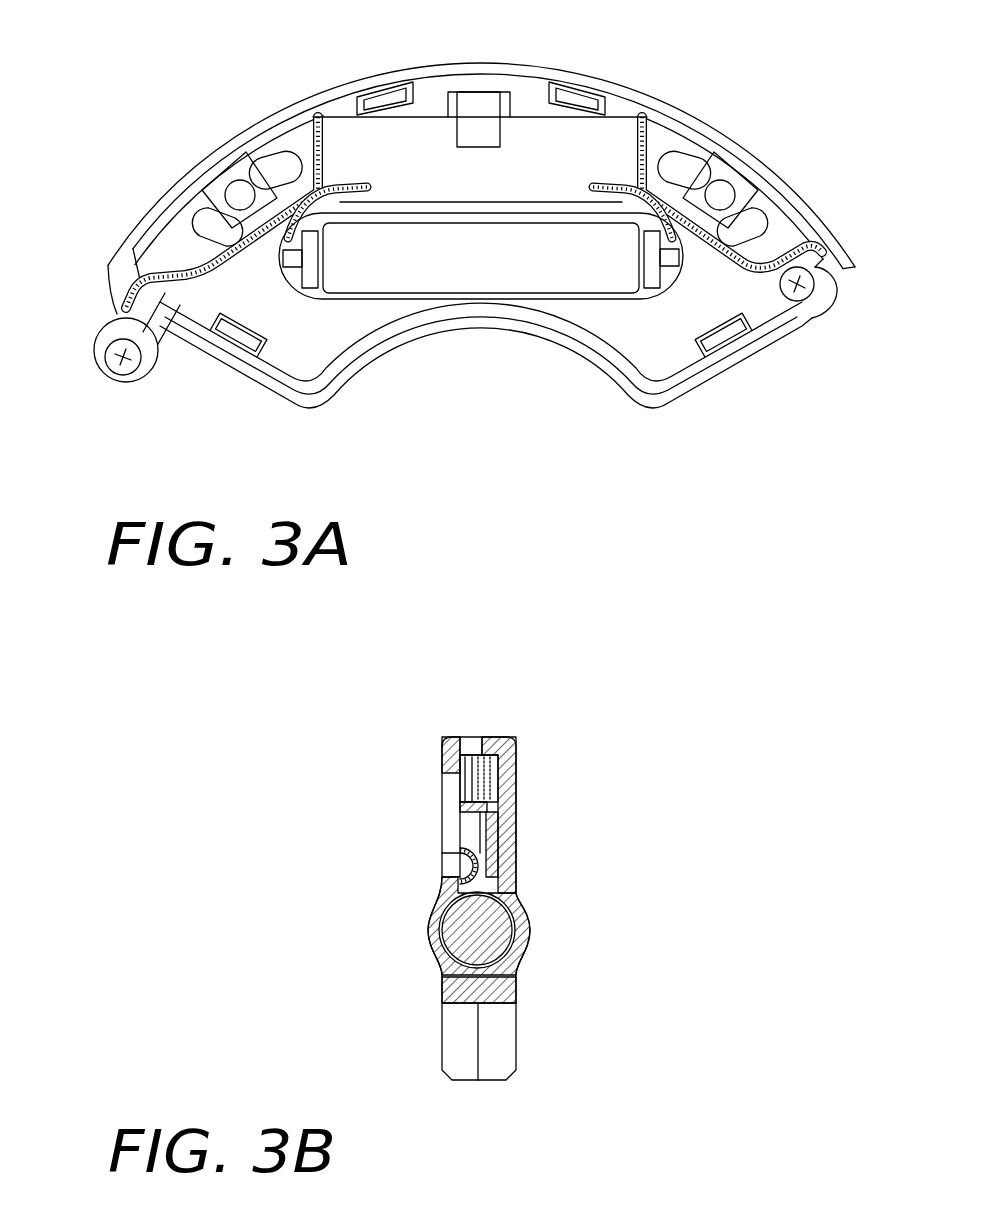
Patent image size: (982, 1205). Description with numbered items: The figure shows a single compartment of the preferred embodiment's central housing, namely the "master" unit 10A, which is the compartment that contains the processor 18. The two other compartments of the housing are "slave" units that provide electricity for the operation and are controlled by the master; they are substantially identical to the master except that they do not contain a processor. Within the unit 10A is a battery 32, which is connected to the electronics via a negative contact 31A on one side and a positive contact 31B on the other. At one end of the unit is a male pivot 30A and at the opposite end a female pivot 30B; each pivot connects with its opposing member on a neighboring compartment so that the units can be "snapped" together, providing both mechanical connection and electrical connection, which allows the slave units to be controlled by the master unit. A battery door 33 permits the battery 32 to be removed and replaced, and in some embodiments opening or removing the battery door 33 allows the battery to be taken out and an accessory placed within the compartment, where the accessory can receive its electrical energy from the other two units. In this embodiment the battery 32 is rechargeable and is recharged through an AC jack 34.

In FIG. 3A, the unit 10A is at (277, 120).
In FIG. 3A, the processor 18 is at (577, 153).
In FIG. 3A, the battery 32 is at (507, 276).
In FIG. 3B, the battery 32 is at (485, 932).
In FIG. 3A, the negative contact 31A is at (293, 257).
In FIG. 3A, the positive contact 31B is at (665, 263).
In FIG. 3A, the male pivot 30A is at (125, 362).
In FIG. 3A, the female pivot 30B is at (806, 300).
In FIG. 3B, the battery door 33 is at (440, 932).
In FIG. 3B, the AC jack 34 is at (455, 786).